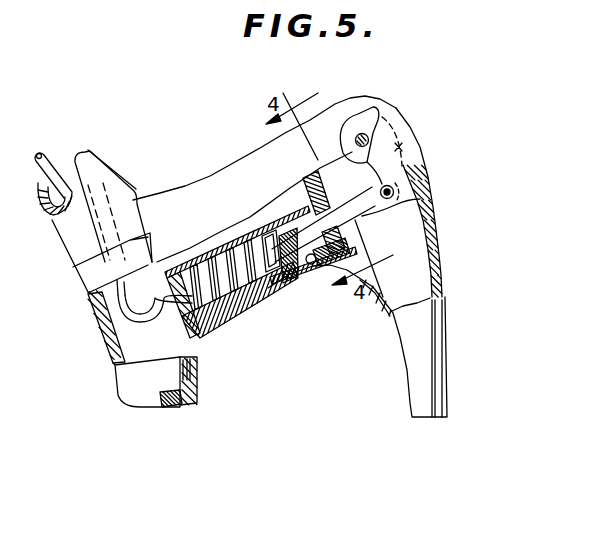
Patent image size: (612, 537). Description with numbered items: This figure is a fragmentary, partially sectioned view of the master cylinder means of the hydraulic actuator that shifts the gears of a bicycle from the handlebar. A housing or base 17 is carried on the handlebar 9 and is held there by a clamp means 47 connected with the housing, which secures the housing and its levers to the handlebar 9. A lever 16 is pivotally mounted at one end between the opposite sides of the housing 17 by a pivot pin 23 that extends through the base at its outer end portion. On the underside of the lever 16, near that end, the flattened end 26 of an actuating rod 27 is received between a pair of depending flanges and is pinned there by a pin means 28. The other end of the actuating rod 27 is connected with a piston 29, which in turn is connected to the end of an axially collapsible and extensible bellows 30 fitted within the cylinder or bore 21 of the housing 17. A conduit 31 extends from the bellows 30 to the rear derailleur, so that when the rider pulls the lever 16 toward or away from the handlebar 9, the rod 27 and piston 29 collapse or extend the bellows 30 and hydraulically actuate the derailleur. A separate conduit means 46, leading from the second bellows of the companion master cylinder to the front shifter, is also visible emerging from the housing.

The handlebar 9 is at (110, 164).
The lever 16 is at (420, 366).
The housing 17 is at (212, 177).
The master cylinder 21 is at (312, 266).
The pivot pin 23 is at (359, 133).
The flattened end 26 is at (402, 136).
The actuating rod 27 is at (355, 220).
The pin means 28 is at (394, 191).
The piston 29 is at (293, 278).
The bellows 30 is at (227, 312).
The conduit 31 is at (62, 163).
The conduit means 46 is at (43, 168).
The clamp means 47 is at (88, 293).